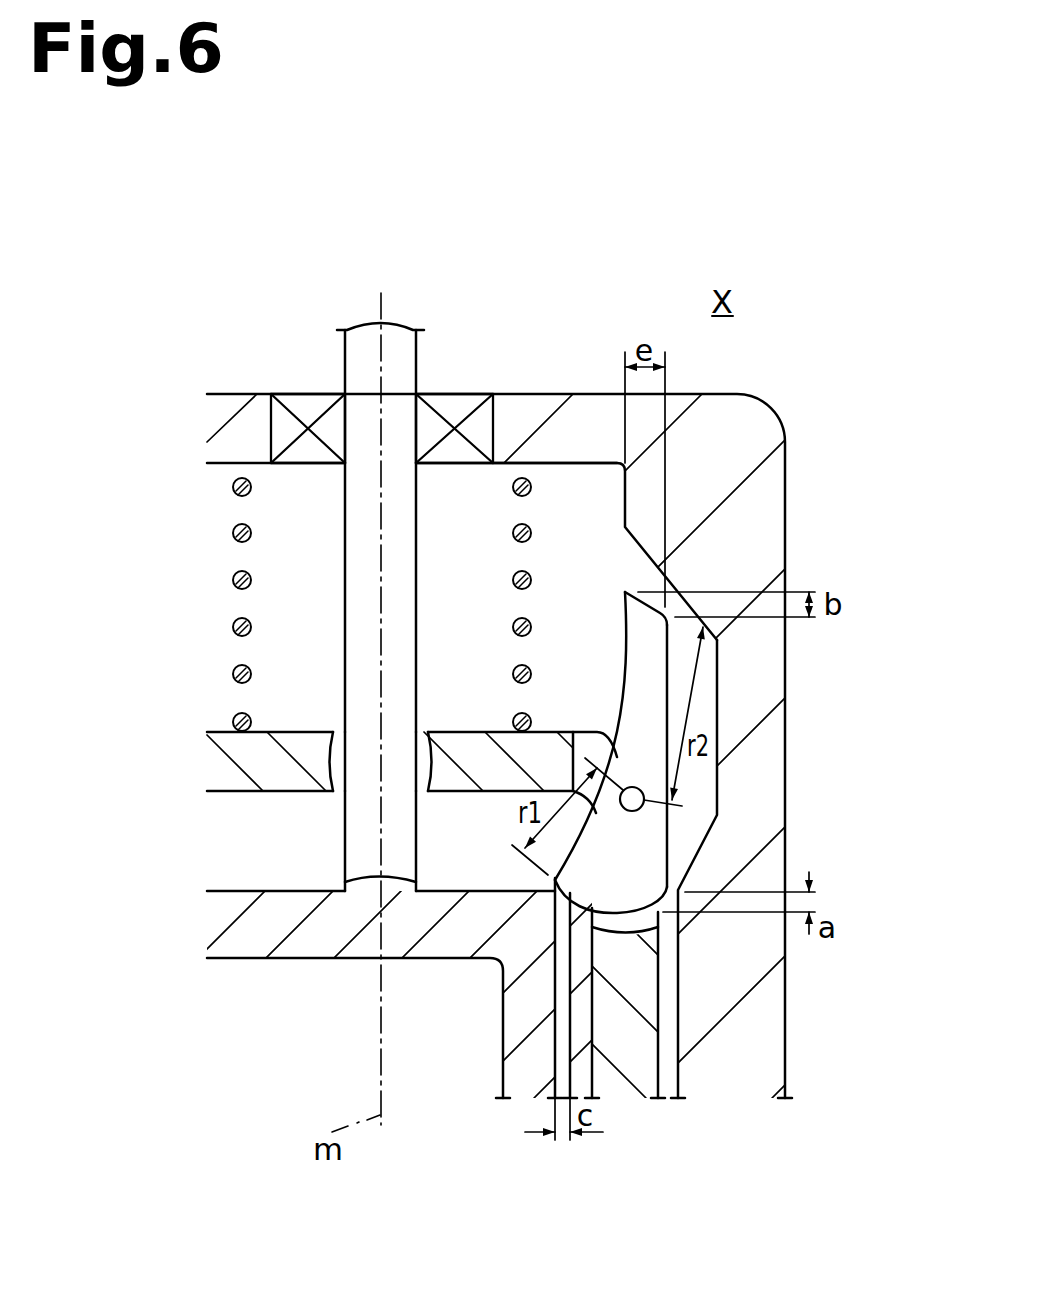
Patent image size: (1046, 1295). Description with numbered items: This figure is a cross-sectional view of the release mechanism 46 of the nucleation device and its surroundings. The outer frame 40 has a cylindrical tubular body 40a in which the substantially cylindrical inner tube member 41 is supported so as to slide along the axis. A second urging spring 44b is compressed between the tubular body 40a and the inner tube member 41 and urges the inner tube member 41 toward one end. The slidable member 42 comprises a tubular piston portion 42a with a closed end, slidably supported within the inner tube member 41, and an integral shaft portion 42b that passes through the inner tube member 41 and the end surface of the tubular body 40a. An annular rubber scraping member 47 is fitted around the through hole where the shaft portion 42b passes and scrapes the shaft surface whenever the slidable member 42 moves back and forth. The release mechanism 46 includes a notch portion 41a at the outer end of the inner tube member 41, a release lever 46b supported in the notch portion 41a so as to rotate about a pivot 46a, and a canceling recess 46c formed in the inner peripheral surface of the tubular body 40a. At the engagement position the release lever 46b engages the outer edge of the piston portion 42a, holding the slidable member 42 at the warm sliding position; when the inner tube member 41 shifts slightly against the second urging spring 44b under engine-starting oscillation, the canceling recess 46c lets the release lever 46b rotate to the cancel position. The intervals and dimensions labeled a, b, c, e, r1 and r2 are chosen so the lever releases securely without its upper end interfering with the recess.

The outer frame 40 is at (790, 517).
The tubular body 40a is at (788, 742).
The inner tube member 41 is at (660, 998).
The notch portion 41a is at (583, 732).
The slidable member 42 is at (342, 828).
The piston portion 42a is at (442, 890).
The shaft portion 42b is at (416, 678).
The second urging spring 44b is at (527, 484).
The release mechanism 46 is at (650, 776).
The pivot 46a is at (638, 812).
The release lever 46b is at (623, 605).
The canceling recess 46c is at (700, 856).
The annular rubber scraping member 47 is at (458, 403).